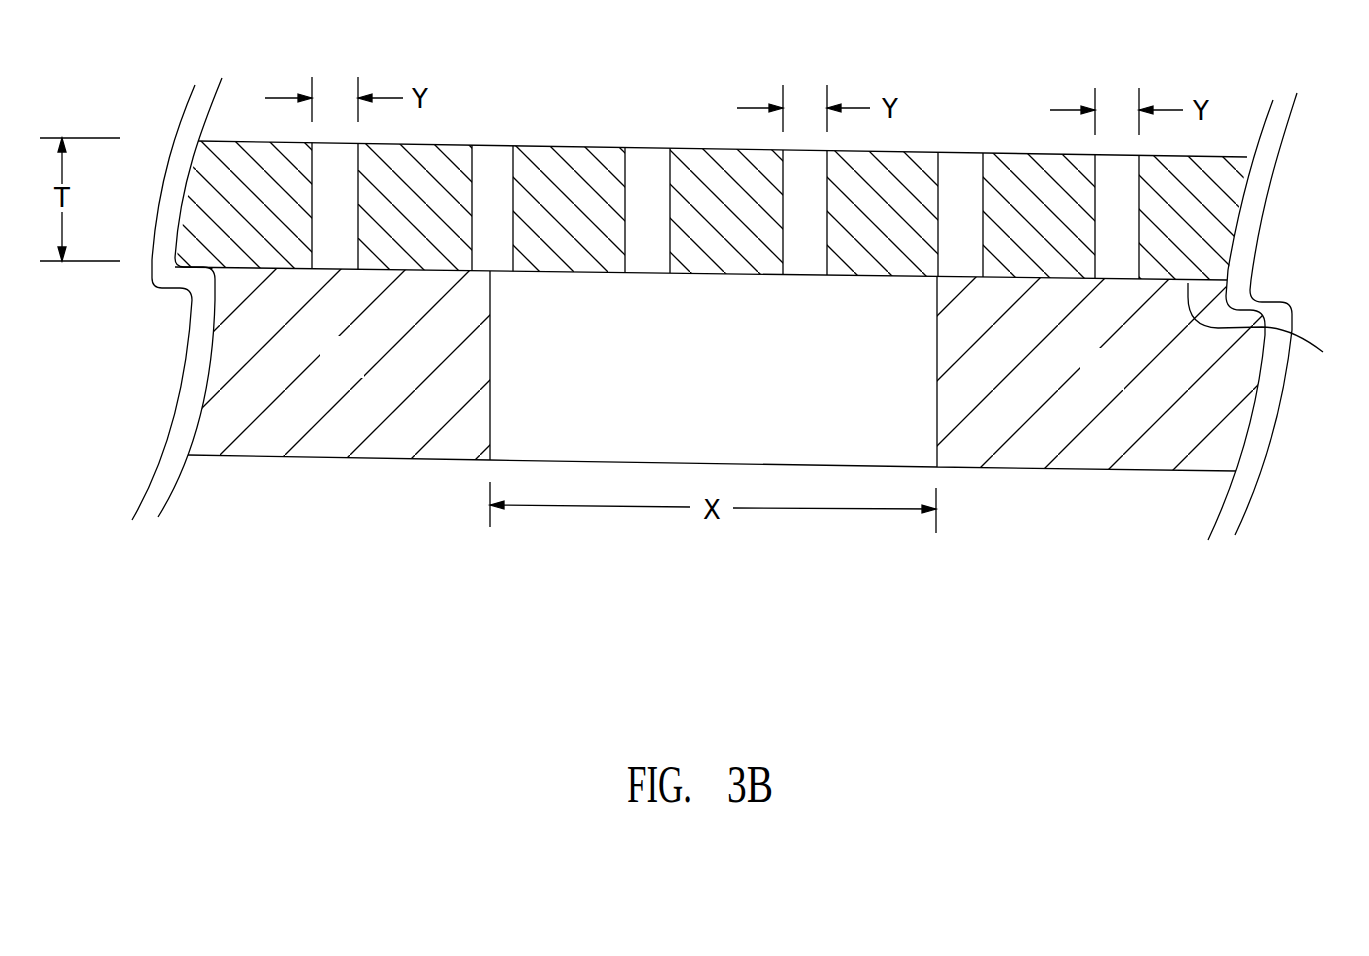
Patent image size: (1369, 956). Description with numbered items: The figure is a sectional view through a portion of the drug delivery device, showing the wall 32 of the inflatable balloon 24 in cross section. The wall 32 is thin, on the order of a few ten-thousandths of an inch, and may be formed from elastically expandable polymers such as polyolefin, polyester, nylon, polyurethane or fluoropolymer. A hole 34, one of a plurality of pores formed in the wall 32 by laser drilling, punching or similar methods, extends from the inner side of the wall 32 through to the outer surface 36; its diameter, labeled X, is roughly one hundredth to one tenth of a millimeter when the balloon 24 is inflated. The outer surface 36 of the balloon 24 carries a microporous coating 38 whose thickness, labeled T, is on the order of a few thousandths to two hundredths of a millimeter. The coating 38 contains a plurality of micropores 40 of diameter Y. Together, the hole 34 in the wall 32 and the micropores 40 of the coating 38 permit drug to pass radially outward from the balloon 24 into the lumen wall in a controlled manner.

The inflatable balloon 24 is at (333, 530).
The wall 32 is at (327, 375).
The holes 34 is at (592, 440).
The outer surface 36 is at (1271, 328).
The microporous coating 38 is at (573, 167).
The micropores 40 is at (497, 165).